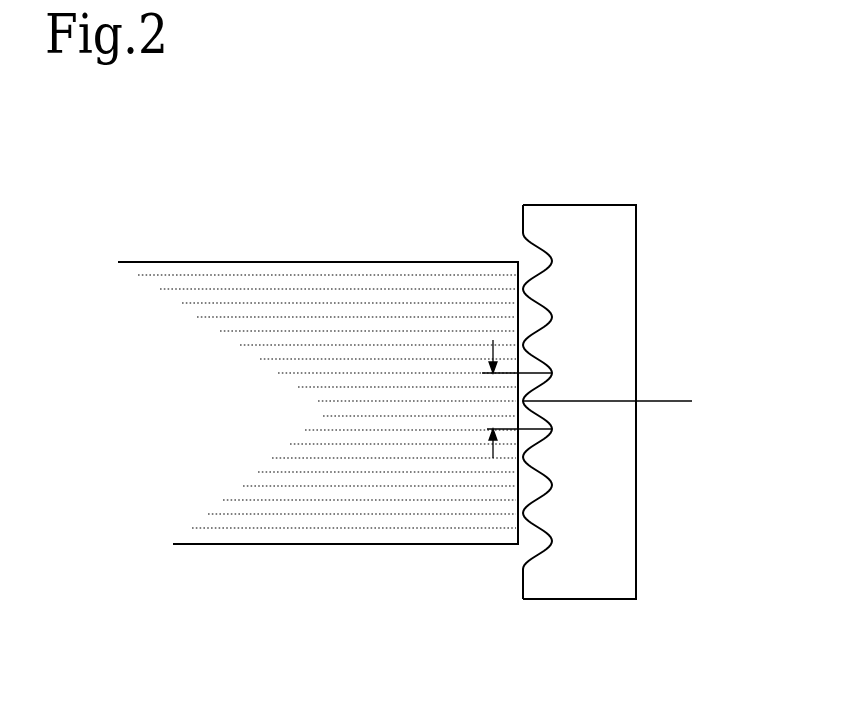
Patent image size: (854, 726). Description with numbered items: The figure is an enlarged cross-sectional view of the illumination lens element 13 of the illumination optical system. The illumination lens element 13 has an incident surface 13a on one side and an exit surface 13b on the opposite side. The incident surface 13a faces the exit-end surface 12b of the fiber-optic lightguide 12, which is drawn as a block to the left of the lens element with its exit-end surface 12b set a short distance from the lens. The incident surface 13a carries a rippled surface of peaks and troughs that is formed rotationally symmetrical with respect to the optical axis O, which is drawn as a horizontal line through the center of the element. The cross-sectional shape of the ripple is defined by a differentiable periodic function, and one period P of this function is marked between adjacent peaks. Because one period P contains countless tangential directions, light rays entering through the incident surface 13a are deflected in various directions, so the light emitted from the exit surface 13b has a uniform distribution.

The fiber-optic lightguide 12 is at (228, 515).
The exit-end surface 12b is at (523, 260).
The illumination lens element 13 is at (588, 563).
The incident surface 13a is at (552, 485).
The exit surface 13b is at (636, 483).
The optical axis O is at (655, 401).
The period P is at (508, 399).